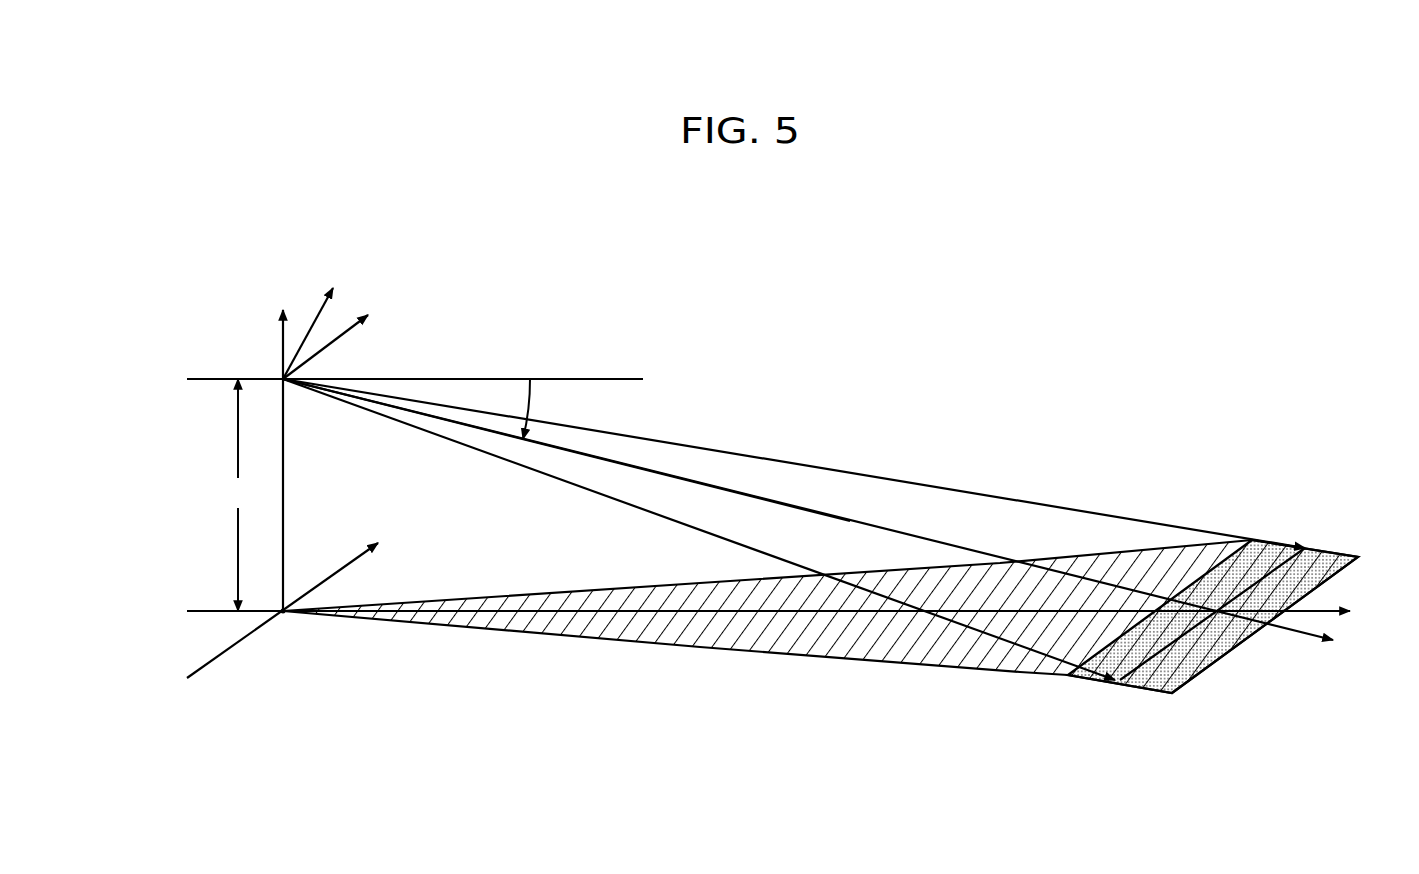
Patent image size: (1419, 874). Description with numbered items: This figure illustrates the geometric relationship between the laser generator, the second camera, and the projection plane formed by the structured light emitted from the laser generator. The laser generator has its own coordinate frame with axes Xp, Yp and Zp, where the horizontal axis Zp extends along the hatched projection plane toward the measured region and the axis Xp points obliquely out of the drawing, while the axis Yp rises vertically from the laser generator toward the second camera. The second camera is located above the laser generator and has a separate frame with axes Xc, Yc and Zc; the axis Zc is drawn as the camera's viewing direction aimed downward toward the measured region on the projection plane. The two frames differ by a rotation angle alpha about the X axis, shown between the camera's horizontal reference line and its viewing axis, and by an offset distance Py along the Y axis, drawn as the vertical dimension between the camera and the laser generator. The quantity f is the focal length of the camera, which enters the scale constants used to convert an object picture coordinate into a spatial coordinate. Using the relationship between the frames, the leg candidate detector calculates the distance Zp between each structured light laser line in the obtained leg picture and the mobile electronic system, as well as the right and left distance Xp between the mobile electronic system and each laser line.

The Zp axis of laser generator frame Zp is at (787, 615).
The Yp axis of laser generator frame Yp is at (283, 445).
The Xp axis of laser generator frame Xp is at (298, 599).
The Zc axis of second camera frame Zc is at (825, 523).
The Yc axis of second camera frame Yc is at (317, 323).
The Xc axis of second camera frame Xc is at (342, 339).
The focal length f is at (850, 523).
The rotation angle α alpha is at (543, 409).
The offset distance Py is at (238, 495).